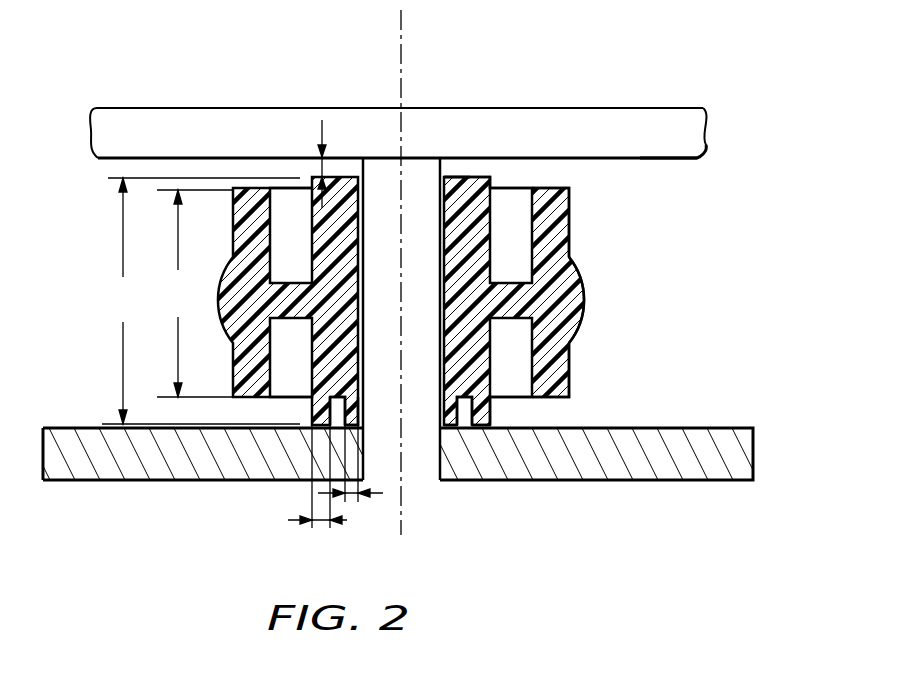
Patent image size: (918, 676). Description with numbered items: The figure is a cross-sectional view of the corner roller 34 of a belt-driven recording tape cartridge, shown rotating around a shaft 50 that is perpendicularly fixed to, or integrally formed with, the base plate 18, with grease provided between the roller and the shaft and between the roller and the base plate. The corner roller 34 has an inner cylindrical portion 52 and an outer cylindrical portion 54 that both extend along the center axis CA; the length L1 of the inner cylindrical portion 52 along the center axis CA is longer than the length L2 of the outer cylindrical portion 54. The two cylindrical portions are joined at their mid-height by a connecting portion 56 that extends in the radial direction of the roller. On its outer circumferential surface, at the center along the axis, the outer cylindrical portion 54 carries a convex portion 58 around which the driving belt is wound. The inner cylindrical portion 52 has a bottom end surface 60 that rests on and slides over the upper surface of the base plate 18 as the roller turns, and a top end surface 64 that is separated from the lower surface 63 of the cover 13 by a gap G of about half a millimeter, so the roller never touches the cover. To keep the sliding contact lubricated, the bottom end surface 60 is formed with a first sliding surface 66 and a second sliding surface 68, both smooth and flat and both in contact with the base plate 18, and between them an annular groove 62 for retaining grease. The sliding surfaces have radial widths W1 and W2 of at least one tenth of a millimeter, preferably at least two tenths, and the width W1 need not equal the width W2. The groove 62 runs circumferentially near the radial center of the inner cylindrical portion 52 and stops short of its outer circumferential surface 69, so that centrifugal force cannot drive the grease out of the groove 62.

The cover 13 is at (118, 115).
The center axis CA is at (402, 37).
The gap G is at (321, 170).
The lower surface 63 is at (673, 158).
The top end surface 64 is at (466, 178).
The inner cylindrical portion 52 is at (470, 192).
The outer cylindrical portion 54 is at (566, 226).
The corner roller 34 is at (638, 272).
The convex portion 58 is at (586, 303).
The connecting portion 56 is at (298, 295).
The annular groove 62 is at (470, 407).
The outer circumferential surface 69 is at (492, 413).
The bottom end surface 60 is at (463, 428).
The second sliding surface 68 is at (316, 425).
The first sliding surface 66 is at (357, 428).
The shaft 50 is at (414, 463).
The base plate 18 is at (737, 450).
The length of the inner cylindrical portion L1 is at (201, 301).
The length of the outer cylindrical portion L2 is at (194, 293).
The width of the first sliding surface W1 is at (355, 497).
The width of the second sliding surface W2 is at (318, 523).